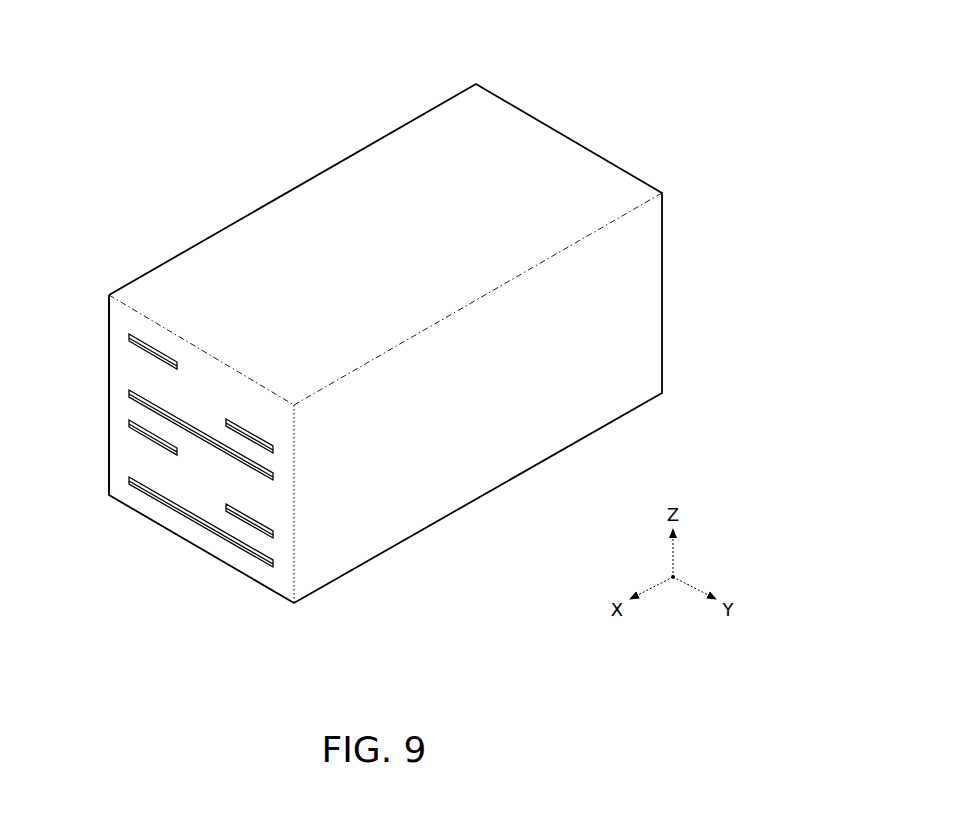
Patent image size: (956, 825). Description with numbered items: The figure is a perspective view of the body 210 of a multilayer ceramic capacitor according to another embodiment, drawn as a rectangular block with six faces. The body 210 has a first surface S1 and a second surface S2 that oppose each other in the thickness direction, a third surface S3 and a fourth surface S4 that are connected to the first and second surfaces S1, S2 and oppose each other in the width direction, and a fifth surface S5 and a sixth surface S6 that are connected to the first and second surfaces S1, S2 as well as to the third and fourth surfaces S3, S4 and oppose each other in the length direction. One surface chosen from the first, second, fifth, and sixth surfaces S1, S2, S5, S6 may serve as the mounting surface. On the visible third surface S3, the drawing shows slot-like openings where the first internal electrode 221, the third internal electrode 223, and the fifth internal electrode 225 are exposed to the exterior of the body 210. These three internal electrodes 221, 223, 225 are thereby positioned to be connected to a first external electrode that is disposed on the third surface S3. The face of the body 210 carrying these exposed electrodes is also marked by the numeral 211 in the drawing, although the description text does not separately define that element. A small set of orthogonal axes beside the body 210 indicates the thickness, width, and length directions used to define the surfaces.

The body 210 is at (137, 36).
The housing 211 is at (116, 378).
The first internal electrode 221 is at (130, 345).
The third internal electrode 223 is at (273, 449).
The fifth internal electrode 225 is at (130, 394).
The first surface S1 is at (398, 181).
The second surface S2 is at (423, 534).
The third surface S3 is at (201, 453).
The fourth surface S4 is at (582, 138).
The fifth surface S5 is at (535, 430).
The sixth surface S6 is at (223, 222).